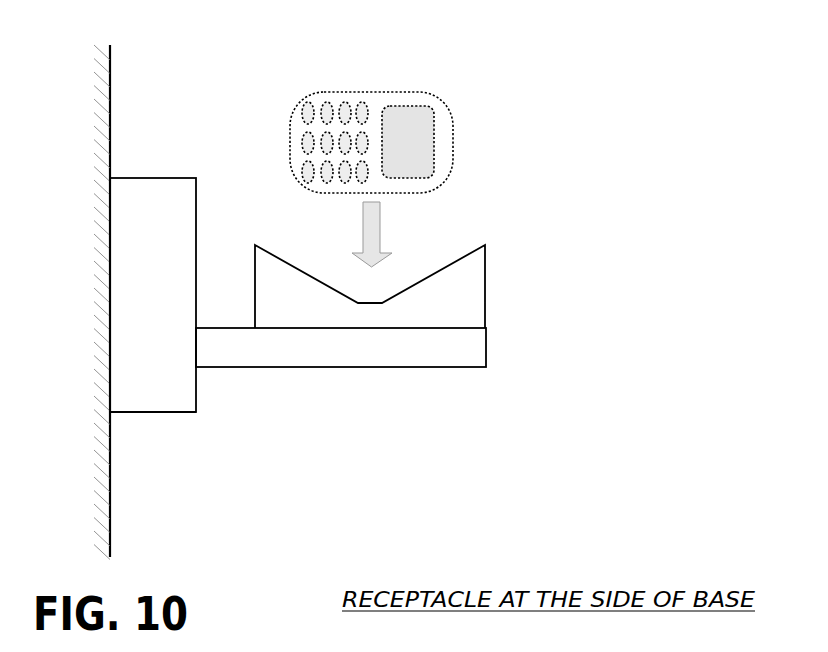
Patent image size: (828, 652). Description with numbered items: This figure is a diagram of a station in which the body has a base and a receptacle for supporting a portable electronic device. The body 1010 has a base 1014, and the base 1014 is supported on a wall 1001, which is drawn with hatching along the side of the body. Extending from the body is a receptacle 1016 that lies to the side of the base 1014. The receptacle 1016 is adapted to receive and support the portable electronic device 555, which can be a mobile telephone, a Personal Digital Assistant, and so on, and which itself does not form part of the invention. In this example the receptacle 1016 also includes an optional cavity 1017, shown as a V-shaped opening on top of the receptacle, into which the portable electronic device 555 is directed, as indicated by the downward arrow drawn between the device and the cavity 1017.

The Portable Electronic Device 555 is at (452, 88).
The wall 1001 is at (110, 535).
The body 1010 is at (194, 150).
The base 1014 is at (196, 412).
The receptacle 1016 is at (486, 355).
The cavity 1017 is at (451, 245).